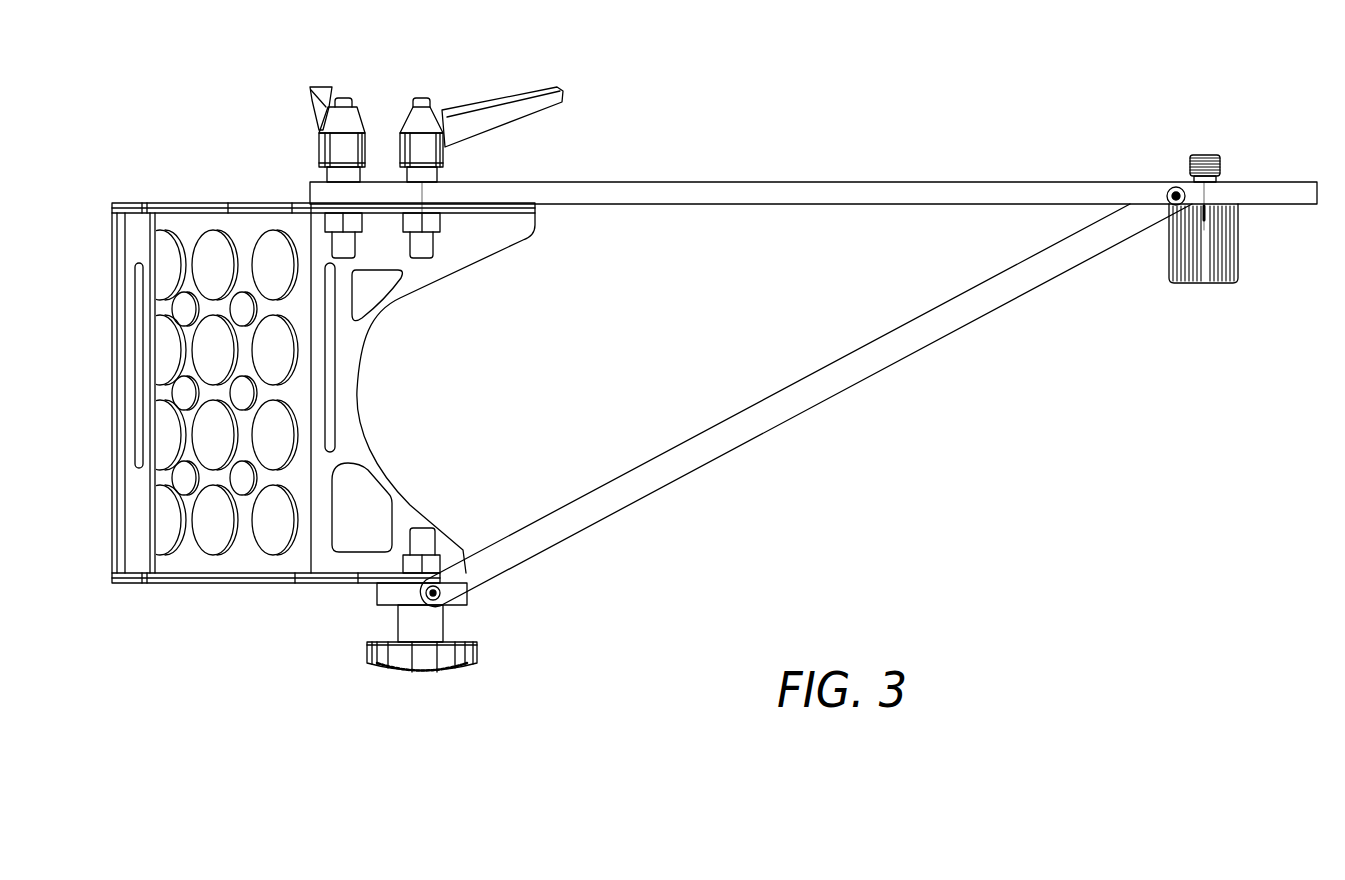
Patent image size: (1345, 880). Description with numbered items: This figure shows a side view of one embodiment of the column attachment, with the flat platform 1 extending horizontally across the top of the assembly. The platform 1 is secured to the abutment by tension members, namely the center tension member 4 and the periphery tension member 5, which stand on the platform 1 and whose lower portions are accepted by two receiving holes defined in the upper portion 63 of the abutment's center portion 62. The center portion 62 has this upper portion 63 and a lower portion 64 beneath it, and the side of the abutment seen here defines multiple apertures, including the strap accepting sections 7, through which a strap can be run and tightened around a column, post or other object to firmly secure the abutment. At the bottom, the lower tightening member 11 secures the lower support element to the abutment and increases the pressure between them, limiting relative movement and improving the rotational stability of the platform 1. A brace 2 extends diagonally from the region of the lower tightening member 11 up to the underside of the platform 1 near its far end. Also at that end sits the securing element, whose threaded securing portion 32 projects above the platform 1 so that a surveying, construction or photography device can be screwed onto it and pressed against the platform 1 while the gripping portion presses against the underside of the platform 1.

The platform 1 is at (815, 182).
The brace 2 is at (808, 412).
The center tension member 4 is at (497, 105).
The periphery tension member 5 is at (330, 90).
The strap accepting sections 7 is at (330, 452).
The lower tightening member 11 is at (425, 672).
The securing portion 32 is at (1207, 153).
The center portion 62 is at (357, 395).
The upper portion 63 is at (513, 238).
The lower portion 64 is at (455, 538).